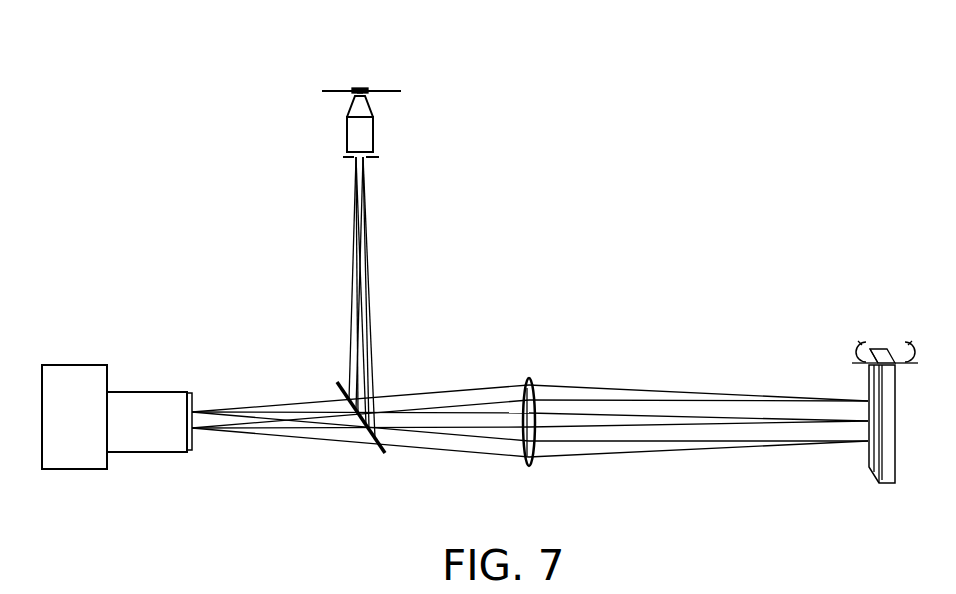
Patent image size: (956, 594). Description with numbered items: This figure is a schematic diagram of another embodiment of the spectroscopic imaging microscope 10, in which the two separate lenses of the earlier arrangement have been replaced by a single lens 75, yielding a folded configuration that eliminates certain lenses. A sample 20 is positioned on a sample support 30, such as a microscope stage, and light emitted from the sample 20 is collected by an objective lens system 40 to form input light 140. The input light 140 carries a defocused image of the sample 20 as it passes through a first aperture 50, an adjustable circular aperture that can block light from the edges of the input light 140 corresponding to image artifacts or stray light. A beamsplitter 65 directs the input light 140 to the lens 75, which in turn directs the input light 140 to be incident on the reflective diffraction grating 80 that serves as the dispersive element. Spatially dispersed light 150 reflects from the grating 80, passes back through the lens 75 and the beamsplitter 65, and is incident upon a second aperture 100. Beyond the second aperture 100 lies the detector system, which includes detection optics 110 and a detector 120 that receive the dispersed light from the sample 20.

The microscope 10 is at (545, 199).
The sample 20 is at (362, 88).
The sample support 30 is at (393, 93).
The objective lens system 40 is at (345, 126).
The first aperture 50 is at (375, 160).
The beamsplitter 65 is at (377, 458).
The lens 75 is at (529, 378).
The reflective diffraction grating 80 is at (893, 485).
The second aperture 100 is at (194, 400).
The detection optics 110 is at (164, 431).
The detector 120 is at (94, 426).
The input light 140 is at (366, 268).
The spatially dispersed light 150 is at (323, 430).